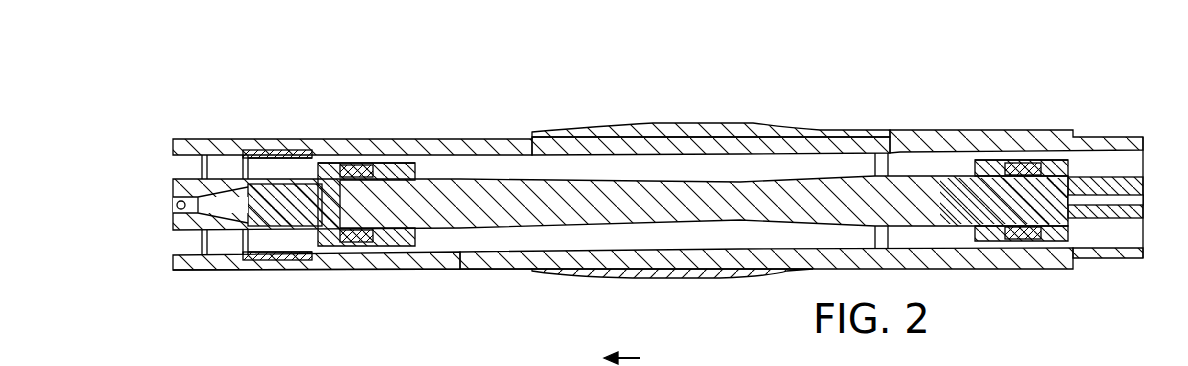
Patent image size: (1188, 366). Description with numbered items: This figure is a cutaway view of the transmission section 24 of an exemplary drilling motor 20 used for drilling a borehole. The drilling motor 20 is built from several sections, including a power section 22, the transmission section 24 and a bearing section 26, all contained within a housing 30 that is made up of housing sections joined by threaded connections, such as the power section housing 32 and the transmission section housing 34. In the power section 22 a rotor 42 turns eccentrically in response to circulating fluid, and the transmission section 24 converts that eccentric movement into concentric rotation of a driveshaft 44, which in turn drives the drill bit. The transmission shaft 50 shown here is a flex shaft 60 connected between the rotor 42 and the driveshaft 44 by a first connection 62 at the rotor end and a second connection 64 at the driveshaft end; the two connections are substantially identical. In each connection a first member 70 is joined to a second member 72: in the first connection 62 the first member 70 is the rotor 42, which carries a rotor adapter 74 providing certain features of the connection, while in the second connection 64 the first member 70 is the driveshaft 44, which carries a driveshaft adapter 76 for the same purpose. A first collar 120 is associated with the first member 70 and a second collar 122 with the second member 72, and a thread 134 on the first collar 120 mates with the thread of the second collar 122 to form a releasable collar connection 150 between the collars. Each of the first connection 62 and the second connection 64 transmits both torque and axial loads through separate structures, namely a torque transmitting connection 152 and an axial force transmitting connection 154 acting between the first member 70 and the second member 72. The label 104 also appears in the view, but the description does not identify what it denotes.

The drilling motor 20 is at (595, 132).
The power section 22 is at (188, 138).
The transmission section 24 is at (686, 124).
The bearing section 26 is at (1117, 122).
The housing 30 is at (867, 140).
The power section housing 32 is at (185, 270).
The transmission section housing 34 is at (722, 263).
The rotor 42 is at (225, 172).
The driveshaft 44 is at (1128, 218).
The transmission shaft 50 is at (594, 218).
The flex shaft 60 is at (803, 266).
The first connection 62 is at (360, 280).
The second connection 64 is at (1027, 270).
The first member 70 is at (276, 233).
The second member 72 is at (468, 218).
The rotor adapter 74 is at (276, 192).
The driveshaft adapter 76 is at (1087, 176).
The section line 104 is at (548, 356).
The first collar 120 is at (333, 164).
The second collar 122 is at (397, 164).
The thread 134 is at (647, 356).
The releasable collar connection 150 is at (358, 165).
The torque transmitting connection 152 is at (323, 244).
The axial force transmitting connection 154 is at (347, 92).